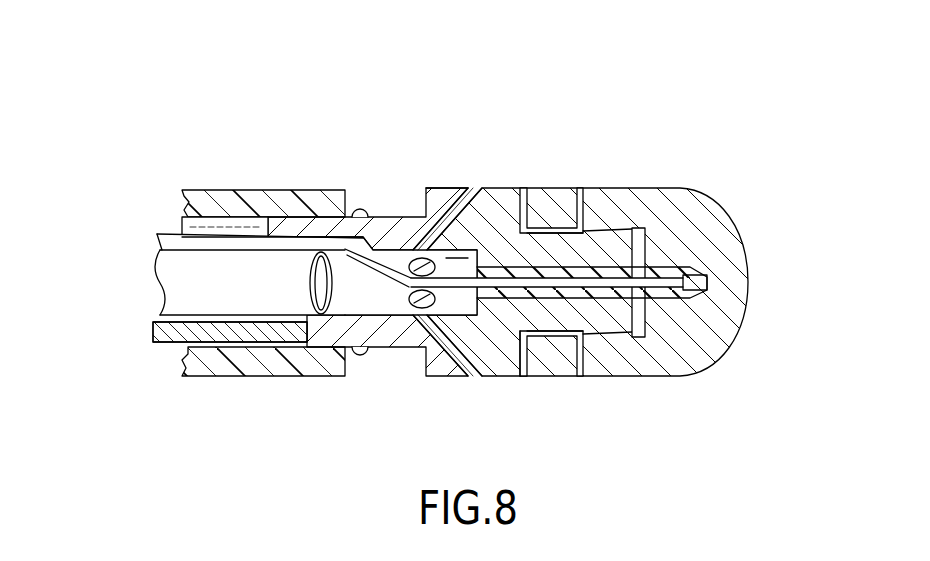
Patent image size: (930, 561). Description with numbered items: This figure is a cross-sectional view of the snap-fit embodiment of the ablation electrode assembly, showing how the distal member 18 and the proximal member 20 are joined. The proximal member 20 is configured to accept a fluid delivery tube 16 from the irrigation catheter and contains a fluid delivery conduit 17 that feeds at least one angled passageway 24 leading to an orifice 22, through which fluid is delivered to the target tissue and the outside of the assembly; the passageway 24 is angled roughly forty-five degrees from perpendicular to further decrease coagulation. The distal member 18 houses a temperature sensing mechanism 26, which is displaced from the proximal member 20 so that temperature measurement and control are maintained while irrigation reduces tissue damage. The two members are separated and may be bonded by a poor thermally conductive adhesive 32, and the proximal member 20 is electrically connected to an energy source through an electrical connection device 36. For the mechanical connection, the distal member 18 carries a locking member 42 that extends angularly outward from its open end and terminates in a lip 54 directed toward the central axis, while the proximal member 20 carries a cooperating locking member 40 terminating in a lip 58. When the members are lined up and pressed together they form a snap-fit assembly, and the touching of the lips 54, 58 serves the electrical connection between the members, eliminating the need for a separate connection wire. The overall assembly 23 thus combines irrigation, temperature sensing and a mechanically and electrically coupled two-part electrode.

The fluid delivery tube 16 is at (165, 255).
The fluid delivery conduit 17 is at (369, 299).
The distal member 18 is at (726, 206).
The proximal member 20 is at (442, 189).
The orifice 22 is at (464, 213).
The connector assembly 23 is at (673, 122).
The passageway 24 is at (468, 190).
The temperature sensing mechanism 26 is at (698, 288).
The poor thermally conductive adhesive 32 is at (524, 377).
The electrical connection device 36 is at (204, 344).
The locking member 40 is at (613, 323).
The locking member 42 is at (551, 225).
The lip 54 is at (587, 221).
The lip 58 is at (580, 338).